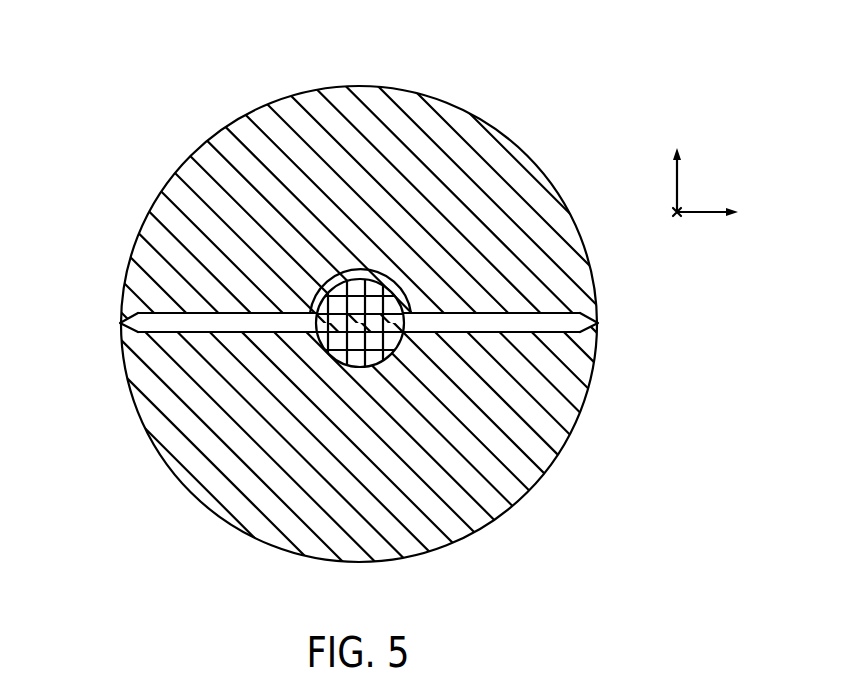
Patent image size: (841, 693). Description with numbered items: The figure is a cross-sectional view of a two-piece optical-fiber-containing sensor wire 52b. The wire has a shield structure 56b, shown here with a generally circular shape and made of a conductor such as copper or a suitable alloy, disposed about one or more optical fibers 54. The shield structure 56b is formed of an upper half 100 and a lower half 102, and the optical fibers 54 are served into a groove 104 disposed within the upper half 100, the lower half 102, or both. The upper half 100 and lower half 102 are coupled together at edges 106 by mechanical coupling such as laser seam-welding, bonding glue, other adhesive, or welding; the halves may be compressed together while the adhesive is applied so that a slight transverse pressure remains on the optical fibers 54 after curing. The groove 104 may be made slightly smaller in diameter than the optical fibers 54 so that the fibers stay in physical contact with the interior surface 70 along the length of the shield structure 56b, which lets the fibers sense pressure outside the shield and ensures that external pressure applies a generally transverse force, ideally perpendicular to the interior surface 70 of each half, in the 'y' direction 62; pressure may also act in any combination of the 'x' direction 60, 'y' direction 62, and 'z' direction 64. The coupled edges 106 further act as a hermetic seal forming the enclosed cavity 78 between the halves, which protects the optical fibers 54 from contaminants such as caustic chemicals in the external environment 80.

The two-piece optical-fiber-containing sensor wire 52b is at (147, 50).
The shield structure 56b is at (545, 173).
The optical fibers 54 is at (393, 343).
The enclosed cavity 78 is at (208, 313).
The edges 106 is at (120, 323).
The groove 104 is at (374, 273).
The upper half 100 is at (452, 143).
The lower half 102 is at (212, 417).
The interior surface 70 is at (248, 332).
The external environment 80 is at (588, 105).
The 'x' direction 60 is at (703, 210).
The 'y' direction 62 is at (677, 185).
The 'z' direction 64 is at (672, 212).